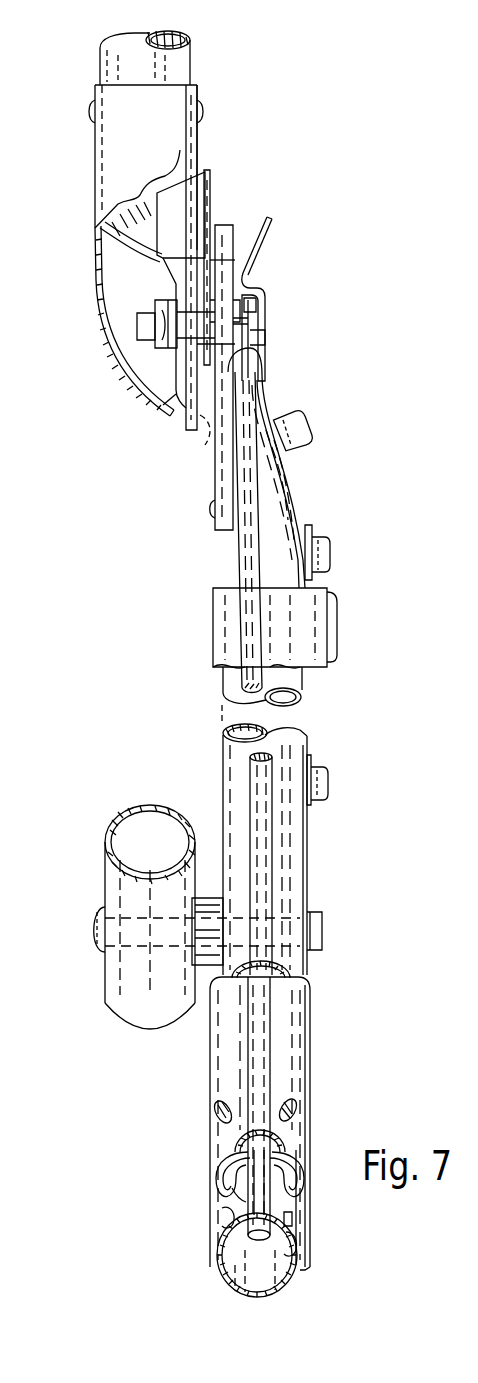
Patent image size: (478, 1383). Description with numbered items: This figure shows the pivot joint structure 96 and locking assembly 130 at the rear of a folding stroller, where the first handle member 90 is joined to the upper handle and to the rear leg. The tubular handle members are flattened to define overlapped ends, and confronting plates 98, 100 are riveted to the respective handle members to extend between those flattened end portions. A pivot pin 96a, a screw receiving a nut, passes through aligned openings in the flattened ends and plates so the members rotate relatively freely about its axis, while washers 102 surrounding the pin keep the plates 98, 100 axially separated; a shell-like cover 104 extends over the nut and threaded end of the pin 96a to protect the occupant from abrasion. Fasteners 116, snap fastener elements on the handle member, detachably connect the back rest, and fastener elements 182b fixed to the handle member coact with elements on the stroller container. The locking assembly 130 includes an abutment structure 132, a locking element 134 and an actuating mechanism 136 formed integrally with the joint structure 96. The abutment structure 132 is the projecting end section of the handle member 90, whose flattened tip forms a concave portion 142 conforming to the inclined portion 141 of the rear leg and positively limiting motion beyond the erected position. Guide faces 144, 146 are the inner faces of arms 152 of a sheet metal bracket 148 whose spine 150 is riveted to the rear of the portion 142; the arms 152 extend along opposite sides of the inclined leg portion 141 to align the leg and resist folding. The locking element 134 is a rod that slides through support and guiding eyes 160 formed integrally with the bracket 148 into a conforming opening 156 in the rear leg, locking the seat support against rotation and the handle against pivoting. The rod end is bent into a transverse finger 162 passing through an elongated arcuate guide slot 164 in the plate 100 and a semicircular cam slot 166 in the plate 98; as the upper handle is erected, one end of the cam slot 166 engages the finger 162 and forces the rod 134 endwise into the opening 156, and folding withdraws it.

The first handle member 90 is at (292, 490).
The pivot joint structure 96 is at (106, 377).
The pivot pin 96a is at (135, 320).
The plate 98 is at (197, 152).
The plate 100 is at (216, 467).
The washers 102 is at (210, 308).
The shell-like cover 104 is at (93, 258).
The fasteners 116 is at (330, 548).
The locking assembly 130 is at (195, 1116).
The abutment structure 132 is at (212, 1180).
The locking element 134 is at (262, 1080).
The locking element actuating mechanism 136 is at (168, 402).
The inclined portion 141 is at (295, 1240).
The concave portion 142 is at (290, 1222).
The guide face 144 is at (230, 1215).
The guide face 146 is at (282, 1288).
The sheet metal bracket 148 is at (295, 1035).
The spine 150 is at (237, 1030).
The arms 152 is at (305, 1205).
The conforming opening 156 is at (235, 1193).
The support and guiding eyes 160 is at (285, 968).
The finger 162 is at (230, 352).
The arcuate guide slot 164 is at (266, 305).
The cam slot 166 is at (198, 452).
The fastener elements 182b is at (290, 418).